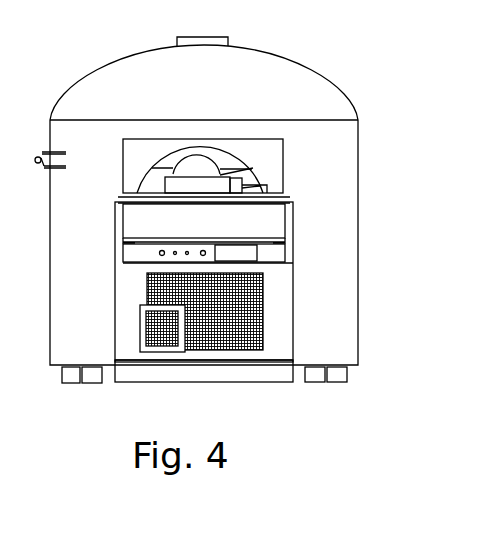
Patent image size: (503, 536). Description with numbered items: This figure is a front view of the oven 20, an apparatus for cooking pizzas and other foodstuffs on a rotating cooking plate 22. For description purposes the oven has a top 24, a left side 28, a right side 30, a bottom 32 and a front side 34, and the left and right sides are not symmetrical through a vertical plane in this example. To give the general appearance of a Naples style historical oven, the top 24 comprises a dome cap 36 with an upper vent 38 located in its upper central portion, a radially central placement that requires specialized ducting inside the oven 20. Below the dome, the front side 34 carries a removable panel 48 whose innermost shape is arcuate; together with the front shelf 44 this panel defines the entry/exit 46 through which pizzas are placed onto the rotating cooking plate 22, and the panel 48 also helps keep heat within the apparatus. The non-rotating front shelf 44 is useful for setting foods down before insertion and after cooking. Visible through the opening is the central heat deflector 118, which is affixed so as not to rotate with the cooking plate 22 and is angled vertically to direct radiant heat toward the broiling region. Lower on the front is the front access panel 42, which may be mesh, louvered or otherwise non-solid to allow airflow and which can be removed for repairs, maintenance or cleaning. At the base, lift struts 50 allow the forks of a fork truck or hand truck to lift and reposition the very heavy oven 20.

The oven 20 is at (60, 76).
The rotating cooking plate 22 is at (254, 171).
The top 24 is at (138, 47).
The left side 28 is at (46, 176).
The right side 30 is at (362, 330).
The bottom 32 is at (203, 362).
The front side 34 is at (318, 342).
The dome cap 36 is at (315, 70).
The upper vent 38 is at (228, 40).
The front access panel 42 is at (139, 354).
The front shelf 44 is at (257, 183).
The entry/exit 46 is at (226, 152).
The removable panel 48 is at (283, 156).
The lift struts 50 is at (150, 375).
The central heat deflector 118 is at (190, 162).